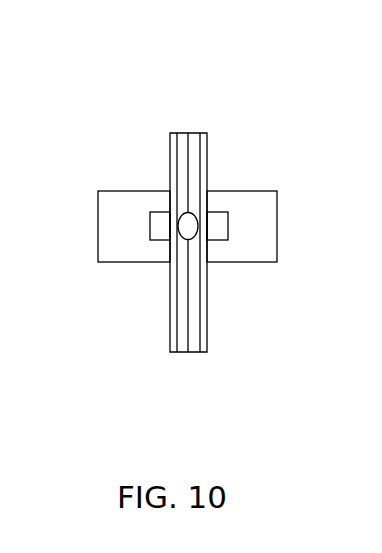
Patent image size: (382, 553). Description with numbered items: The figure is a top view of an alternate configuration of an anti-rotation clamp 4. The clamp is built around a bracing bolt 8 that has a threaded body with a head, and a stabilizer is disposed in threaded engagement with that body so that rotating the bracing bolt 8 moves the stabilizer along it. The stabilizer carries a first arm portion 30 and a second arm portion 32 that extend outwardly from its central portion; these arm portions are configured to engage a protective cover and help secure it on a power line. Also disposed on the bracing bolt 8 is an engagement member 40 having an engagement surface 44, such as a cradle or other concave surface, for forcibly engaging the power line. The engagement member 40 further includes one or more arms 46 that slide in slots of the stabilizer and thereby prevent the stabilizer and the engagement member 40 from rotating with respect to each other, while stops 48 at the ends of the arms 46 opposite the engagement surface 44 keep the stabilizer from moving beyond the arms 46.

The anti-rotation clamp 4 is at (119, 50).
The bracing bolt 8 is at (193, 222).
The first arm portion 30 is at (105, 222).
The second arm portion 32 is at (265, 222).
The engagement member 40 is at (183, 305).
The engagement surface 44 is at (192, 155).
The arms 46 is at (162, 223).
The stops 48 is at (227, 212).